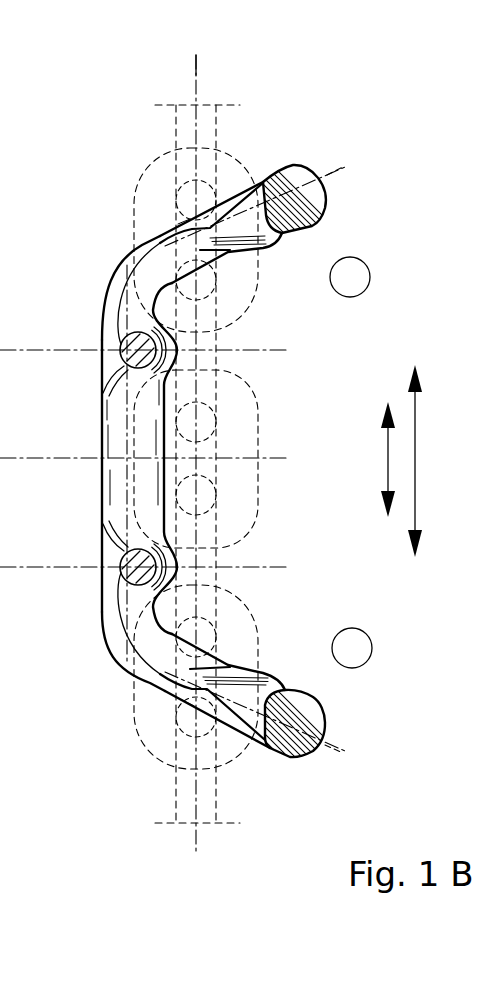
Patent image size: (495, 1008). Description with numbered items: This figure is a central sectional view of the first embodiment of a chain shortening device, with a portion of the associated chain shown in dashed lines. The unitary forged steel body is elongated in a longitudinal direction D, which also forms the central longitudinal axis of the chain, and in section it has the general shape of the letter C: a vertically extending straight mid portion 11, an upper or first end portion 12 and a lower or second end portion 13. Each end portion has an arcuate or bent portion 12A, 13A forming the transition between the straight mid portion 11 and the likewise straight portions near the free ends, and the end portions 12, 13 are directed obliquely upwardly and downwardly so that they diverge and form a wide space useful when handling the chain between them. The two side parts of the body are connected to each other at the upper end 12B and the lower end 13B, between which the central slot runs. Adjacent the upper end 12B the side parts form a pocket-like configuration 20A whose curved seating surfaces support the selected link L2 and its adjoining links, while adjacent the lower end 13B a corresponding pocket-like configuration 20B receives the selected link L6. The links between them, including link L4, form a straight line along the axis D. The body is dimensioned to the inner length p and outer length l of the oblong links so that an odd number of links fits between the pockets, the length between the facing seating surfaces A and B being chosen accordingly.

The mid portion 11 is at (103, 415).
The upper end portion 12 is at (211, 215).
The arcuate portion 12A is at (103, 283).
The upper end 12B is at (297, 173).
The lower end portion 13 is at (228, 706).
The arcuate portion 13A is at (107, 650).
The lower end 13B is at (323, 728).
The pocket-like configuration 20A is at (182, 222).
The pocket-like configuration 20B is at (188, 703).
The selected link L2 is at (147, 209).
The chain link L4 is at (233, 402).
The selected link L6 is at (244, 614).
The longitudinal direction D is at (198, 70).
The seating surface A is at (168, 256).
The seating surface B is at (170, 661).
The inner length p is at (372, 459).
The outer length l is at (425, 461).